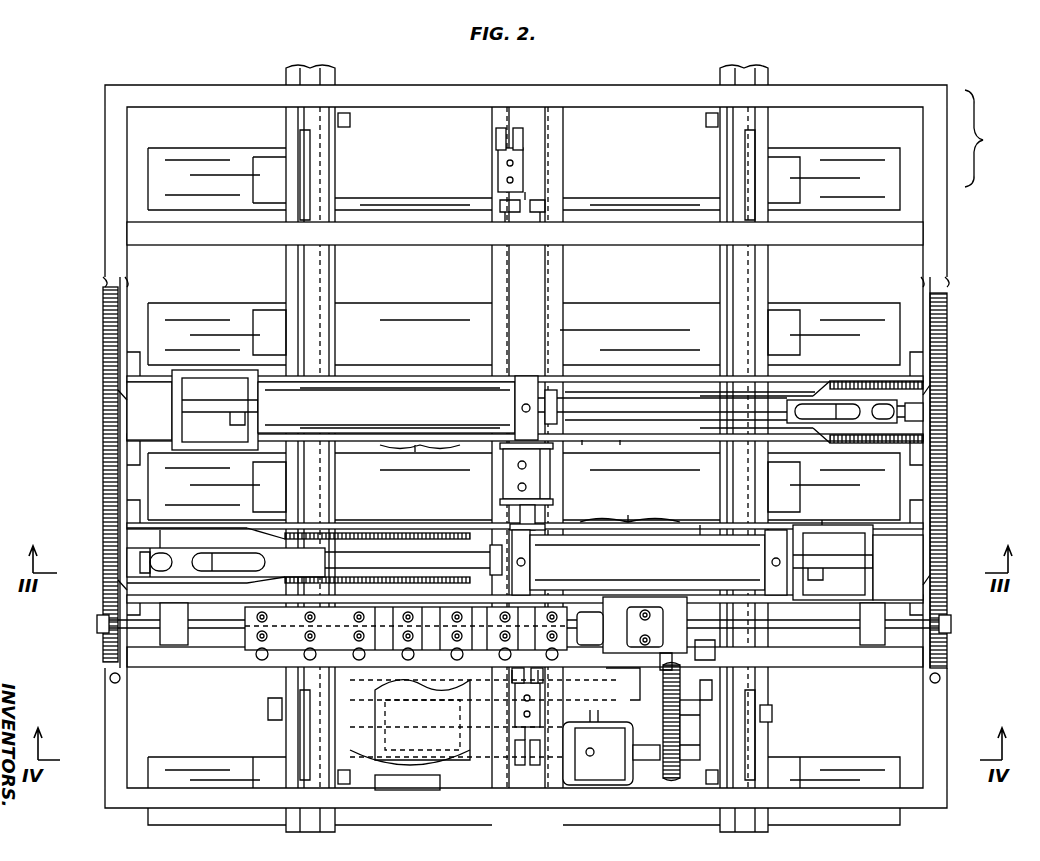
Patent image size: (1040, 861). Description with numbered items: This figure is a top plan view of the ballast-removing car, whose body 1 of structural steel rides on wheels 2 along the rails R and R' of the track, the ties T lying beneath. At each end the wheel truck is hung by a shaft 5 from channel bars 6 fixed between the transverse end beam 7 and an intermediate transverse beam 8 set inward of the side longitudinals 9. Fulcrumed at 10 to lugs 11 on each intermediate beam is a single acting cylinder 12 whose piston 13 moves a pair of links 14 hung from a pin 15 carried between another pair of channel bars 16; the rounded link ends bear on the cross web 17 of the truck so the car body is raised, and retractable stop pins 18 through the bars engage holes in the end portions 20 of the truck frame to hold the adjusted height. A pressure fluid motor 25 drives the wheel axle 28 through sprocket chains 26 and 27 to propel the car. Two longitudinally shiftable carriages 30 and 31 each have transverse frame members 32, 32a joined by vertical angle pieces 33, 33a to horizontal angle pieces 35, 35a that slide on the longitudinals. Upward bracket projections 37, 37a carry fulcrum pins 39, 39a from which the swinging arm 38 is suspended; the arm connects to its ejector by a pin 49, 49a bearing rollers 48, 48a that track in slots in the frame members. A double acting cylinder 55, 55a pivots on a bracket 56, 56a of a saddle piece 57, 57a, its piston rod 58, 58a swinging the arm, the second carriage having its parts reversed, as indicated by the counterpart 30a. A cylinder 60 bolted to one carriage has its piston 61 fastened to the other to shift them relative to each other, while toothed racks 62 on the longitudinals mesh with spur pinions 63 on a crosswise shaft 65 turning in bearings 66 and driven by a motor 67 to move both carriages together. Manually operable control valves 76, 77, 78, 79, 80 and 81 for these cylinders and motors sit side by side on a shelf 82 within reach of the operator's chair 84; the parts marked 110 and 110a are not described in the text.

The car body 1 is at (983, 138).
The wheels 2 is at (300, 143).
The shaft 5 is at (650, 680).
The channel bars 6 is at (305, 760).
The transverse end beam 7 is at (413, 85).
The intermediate transverse beam 8 is at (422, 232).
The side longitudinals 9 is at (105, 195).
The fulcrum 10 is at (548, 220).
The lugs 11 is at (535, 225).
The single acting pressure fluid cylinder 12 is at (498, 180).
The piston 13 is at (530, 160).
The links 14 is at (532, 128).
The pin 15 is at (548, 137).
The channel bars 16 is at (492, 125).
The cross web 17 is at (646, 150).
The retractable stop pins 18 is at (350, 120).
The end portions of the truck frame 20 is at (336, 165).
The pressure fluid motor 25 is at (588, 775).
The sprocket chain 26 is at (690, 735).
The sprocket chain 27 is at (700, 640).
The wheel axle 28 is at (772, 712).
The carriage 30 is at (630, 504).
The carriage element 30a is at (897, 408).
The carriage 31 is at (420, 462).
The frame members 32 is at (898, 567).
The frame members 32a is at (149, 411).
The vertical angle pieces 33 is at (135, 490).
The vertical angle pieces 33a is at (135, 375).
The horizontal angle piece 35 is at (112, 583).
The horizontal angle piece 35a is at (118, 410).
The upward bracket projections 37 is at (435, 537).
The upward bracket projections 37a is at (640, 420).
The arm 38 is at (186, 550).
The fulcrum pin 39 is at (265, 580).
The fulcrum pin 39a is at (817, 412).
The rollers 48 is at (110, 532).
The rollers 48a is at (925, 383).
The pin 49 is at (145, 550).
The pin 49a is at (915, 416).
The double acting pressure fluid cylinder 55 is at (698, 530).
The actuating cylinder 55a is at (385, 395).
The bracket 56 is at (833, 562).
The bracket 56a is at (232, 405).
The saddle piece 57 is at (822, 525).
The saddle piece 57a is at (245, 450).
The piston rod 58 is at (458, 545).
The piston rod 58a is at (600, 440).
The double acting pressure fluid cylinder 60 is at (535, 472).
The piston 61 is at (537, 513).
The toothed racks 62 is at (108, 433).
The spur pinions 63 is at (97, 625).
The crosswise shaft 65 is at (200, 628).
The bearings 66 is at (170, 642).
The pressure fluid motor 67 is at (618, 605).
The control valve 76 is at (290, 640).
The control valve 77 is at (320, 640).
The control valve 78 is at (388, 642).
The control valve 79 is at (432, 642).
The control valve 80 is at (481, 642).
The control valve 81 is at (560, 640).
The shelf 82 is at (530, 610).
The chair 84 is at (420, 788).
The lower cylinder 110 is at (649, 562).
The upper cylinder 110a is at (409, 408).
The rail R is at (341, 268).
The rail R' is at (709, 268).
The ties T is at (625, 205).